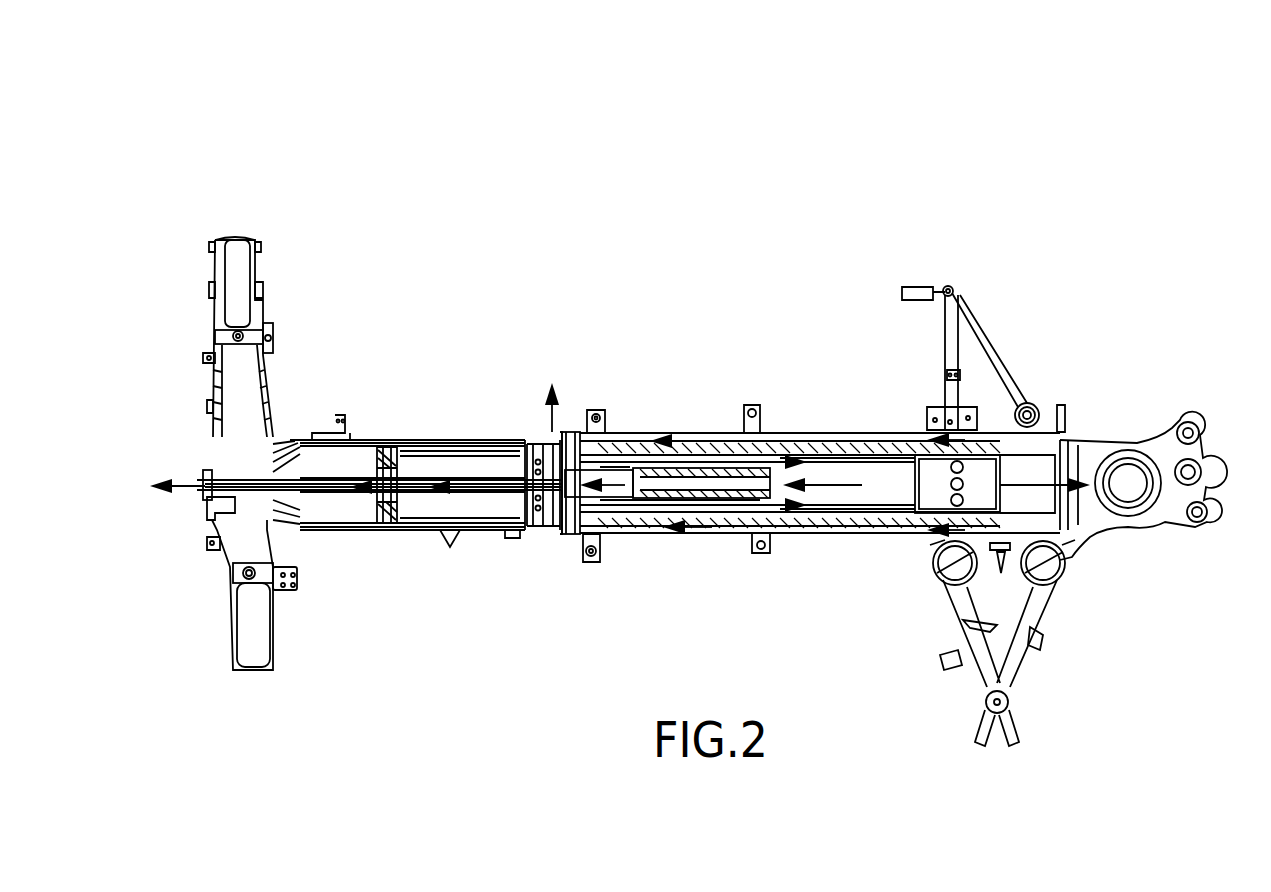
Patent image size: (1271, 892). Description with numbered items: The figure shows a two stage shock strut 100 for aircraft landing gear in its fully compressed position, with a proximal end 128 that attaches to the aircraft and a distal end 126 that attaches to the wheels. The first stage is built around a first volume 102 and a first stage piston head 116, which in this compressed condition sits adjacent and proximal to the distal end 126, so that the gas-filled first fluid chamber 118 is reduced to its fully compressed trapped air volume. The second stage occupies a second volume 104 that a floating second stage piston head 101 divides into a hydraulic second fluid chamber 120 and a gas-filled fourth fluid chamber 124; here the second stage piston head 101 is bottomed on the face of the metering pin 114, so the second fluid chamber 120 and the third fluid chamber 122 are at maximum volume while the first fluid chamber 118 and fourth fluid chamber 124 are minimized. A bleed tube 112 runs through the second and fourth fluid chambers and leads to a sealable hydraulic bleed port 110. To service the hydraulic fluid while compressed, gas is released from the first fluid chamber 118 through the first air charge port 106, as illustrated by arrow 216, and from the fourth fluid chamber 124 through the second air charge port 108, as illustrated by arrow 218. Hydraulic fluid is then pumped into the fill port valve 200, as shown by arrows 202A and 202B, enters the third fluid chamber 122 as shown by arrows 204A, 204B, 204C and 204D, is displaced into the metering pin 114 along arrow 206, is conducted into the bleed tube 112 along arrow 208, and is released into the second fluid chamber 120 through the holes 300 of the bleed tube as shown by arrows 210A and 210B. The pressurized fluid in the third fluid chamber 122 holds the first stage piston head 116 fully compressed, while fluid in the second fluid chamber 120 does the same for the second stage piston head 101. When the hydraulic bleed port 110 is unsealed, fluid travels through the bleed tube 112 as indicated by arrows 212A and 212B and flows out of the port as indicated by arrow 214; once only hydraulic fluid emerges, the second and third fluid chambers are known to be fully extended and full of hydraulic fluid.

The two stage shock strut 100 is at (172, 198).
The second stage piston head 101 is at (533, 497).
The first volume 102 is at (812, 526).
The second volume 104 is at (495, 465).
The first air charge port 106 is at (1080, 482).
The second air charge port 108 is at (553, 431).
The hydraulic bleed port 110 is at (198, 484).
The bleed tube 112 is at (300, 495).
The metering pin 114 is at (698, 497).
The first stage piston head 116 is at (937, 468).
The first fluid chamber 118 is at (1023, 425).
The second fluid chamber 120 is at (420, 508).
The third fluid chamber 122 is at (670, 503).
The fourth fluid chamber 124 is at (566, 428).
The distal end 126 is at (1176, 552).
The proximal end 128 is at (172, 522).
The fill port valve 200 is at (1007, 430).
The arrow 202A is at (962, 430).
The arrow 202B is at (955, 530).
The arrow 204A is at (722, 497).
The arrow 204B is at (697, 433).
The arrow 204C is at (738, 506).
The arrow 204D is at (790, 435).
The arrow 206 is at (830, 487).
The arrow 208 is at (613, 480).
The arrow 210A is at (388, 505).
The arrow 210B is at (410, 462).
The arrow 212A is at (450, 488).
The arrow 212B is at (376, 496).
The arrow 214 is at (162, 486).
The arrow 216 is at (1063, 435).
The arrow 218 is at (553, 370).
The holes 300 is at (398, 462).